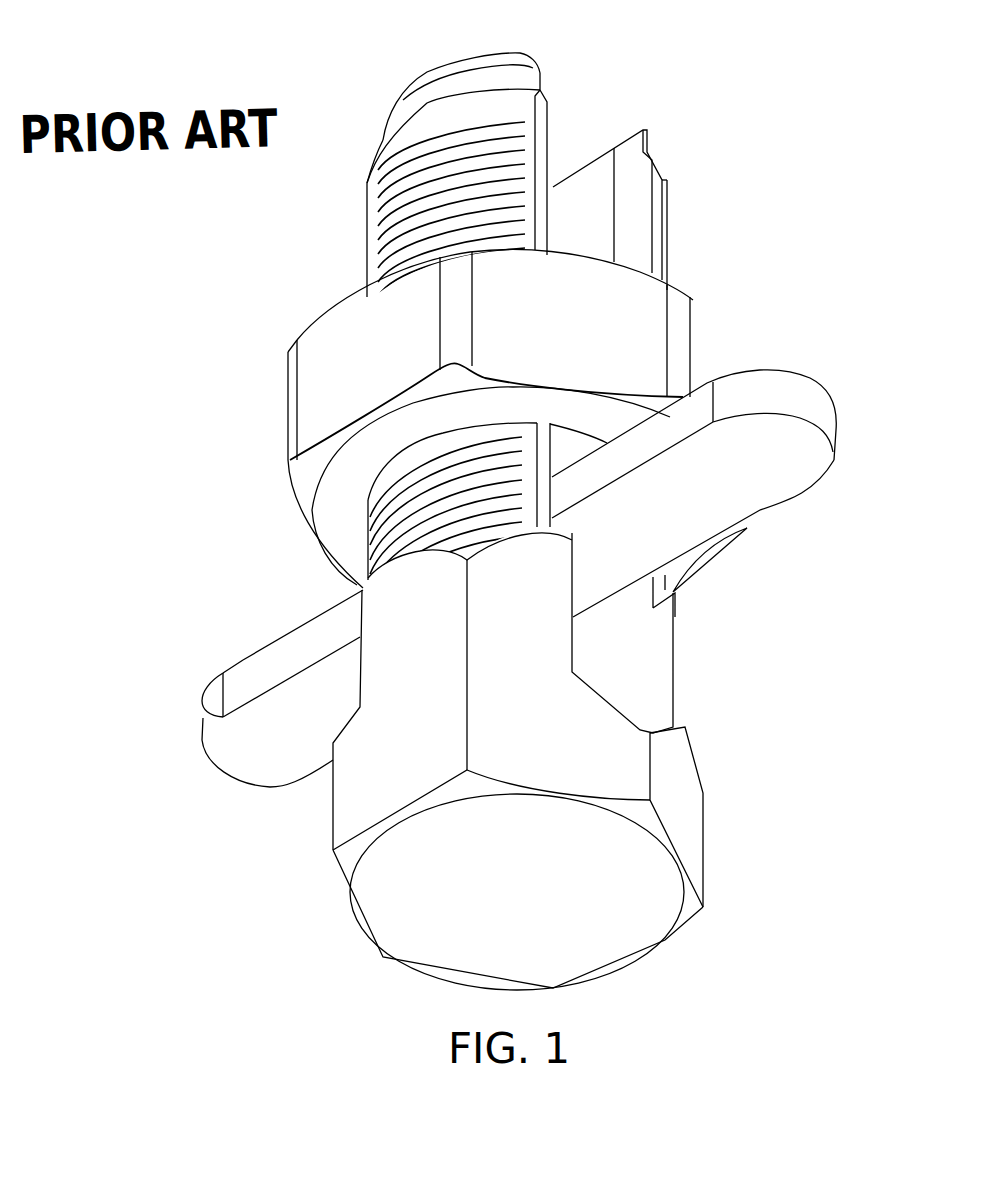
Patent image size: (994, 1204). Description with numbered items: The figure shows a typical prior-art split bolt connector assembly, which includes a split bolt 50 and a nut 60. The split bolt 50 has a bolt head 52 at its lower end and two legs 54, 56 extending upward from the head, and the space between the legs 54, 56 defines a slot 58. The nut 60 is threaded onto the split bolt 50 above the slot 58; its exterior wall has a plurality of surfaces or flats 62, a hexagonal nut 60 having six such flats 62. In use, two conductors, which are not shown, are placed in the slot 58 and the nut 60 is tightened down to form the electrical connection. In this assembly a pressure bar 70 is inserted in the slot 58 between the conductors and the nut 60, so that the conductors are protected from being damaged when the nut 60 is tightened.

The split bolt 50 is at (294, 936).
The bolt head 52 is at (687, 827).
The leg 54 is at (414, 86).
The leg 56 is at (651, 148).
The slot 58 is at (643, 692).
The nut 60 is at (293, 340).
The flats 62 is at (313, 408).
The pressure bar 70 is at (806, 376).